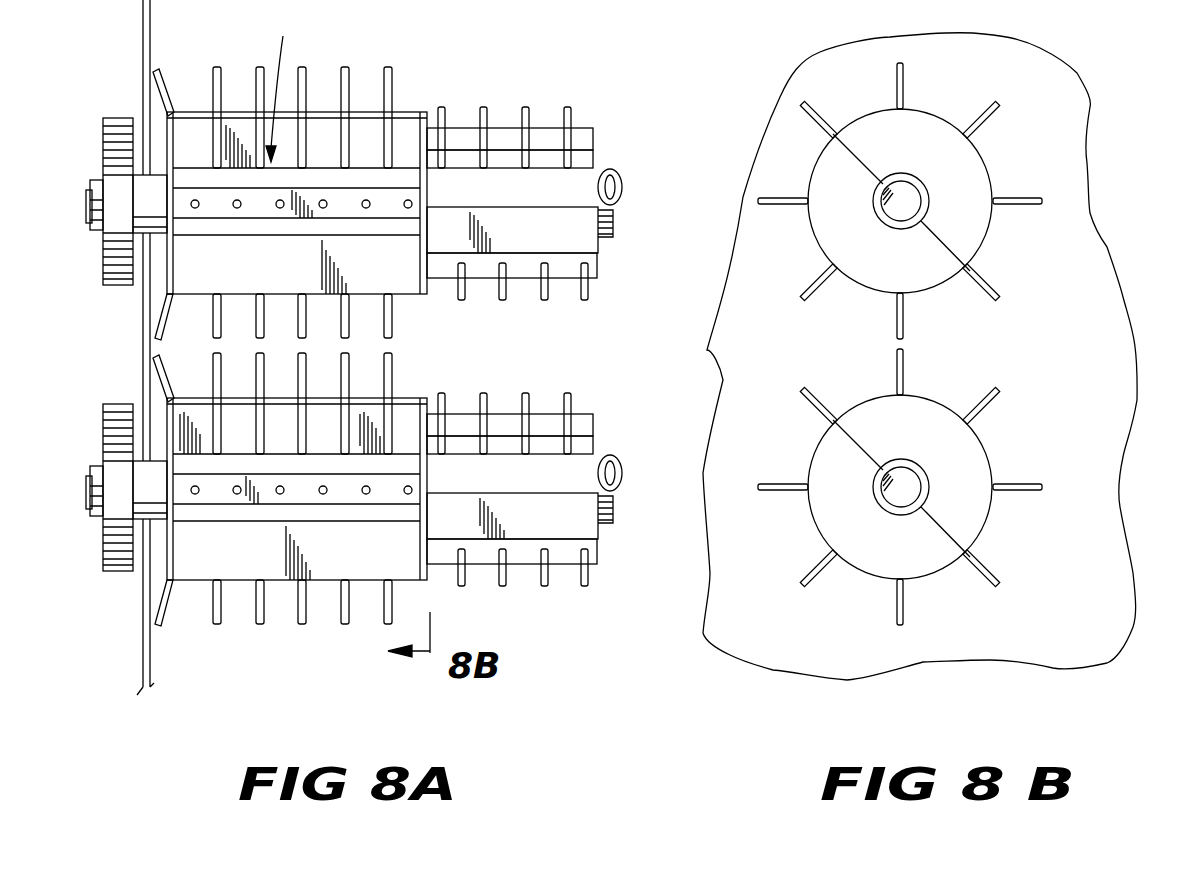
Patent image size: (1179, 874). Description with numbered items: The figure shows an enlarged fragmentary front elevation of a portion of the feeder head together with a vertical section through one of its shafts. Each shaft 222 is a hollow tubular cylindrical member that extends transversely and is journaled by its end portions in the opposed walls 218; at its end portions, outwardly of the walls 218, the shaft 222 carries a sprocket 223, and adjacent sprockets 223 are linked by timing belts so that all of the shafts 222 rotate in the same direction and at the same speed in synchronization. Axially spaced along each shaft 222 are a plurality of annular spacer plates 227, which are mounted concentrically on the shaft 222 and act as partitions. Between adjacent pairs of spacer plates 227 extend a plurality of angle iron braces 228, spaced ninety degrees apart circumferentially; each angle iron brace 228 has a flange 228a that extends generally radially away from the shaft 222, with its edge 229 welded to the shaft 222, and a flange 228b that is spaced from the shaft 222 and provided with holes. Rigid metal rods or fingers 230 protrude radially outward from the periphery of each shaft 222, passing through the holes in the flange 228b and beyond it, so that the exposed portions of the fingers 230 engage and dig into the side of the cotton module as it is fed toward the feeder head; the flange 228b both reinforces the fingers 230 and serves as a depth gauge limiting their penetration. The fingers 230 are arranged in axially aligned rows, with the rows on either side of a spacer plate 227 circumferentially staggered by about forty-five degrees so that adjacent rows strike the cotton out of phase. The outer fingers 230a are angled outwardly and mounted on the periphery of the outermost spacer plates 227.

In FIG. 8A, the wall 218 is at (150, 14).
In FIG. 8B, the wall 218 is at (1053, 117).
In FIG. 8A, the shaft 222 is at (621, 176).
In FIG. 8B, the shaft 222 is at (877, 204).
In FIG. 8A, the sprocket 223 is at (110, 139).
In FIG. 8A, the spacer plate 227 is at (427, 187).
In FIG. 8B, the spacer plate 227 is at (984, 233).
In FIG. 8A, the angle iron brace 228 is at (410, 112).
In FIG. 8A, the flange 228a is at (247, 127).
In FIG. 8A, the flange 228b is at (345, 115).
In FIG. 8A, the edge 229 is at (288, 86).
In FIG. 8A, the finger 230 is at (423, 10).
In FIG. 8B, the finger 230 is at (897, 90).
In FIG. 8A, the outer finger 230a is at (151, 92).